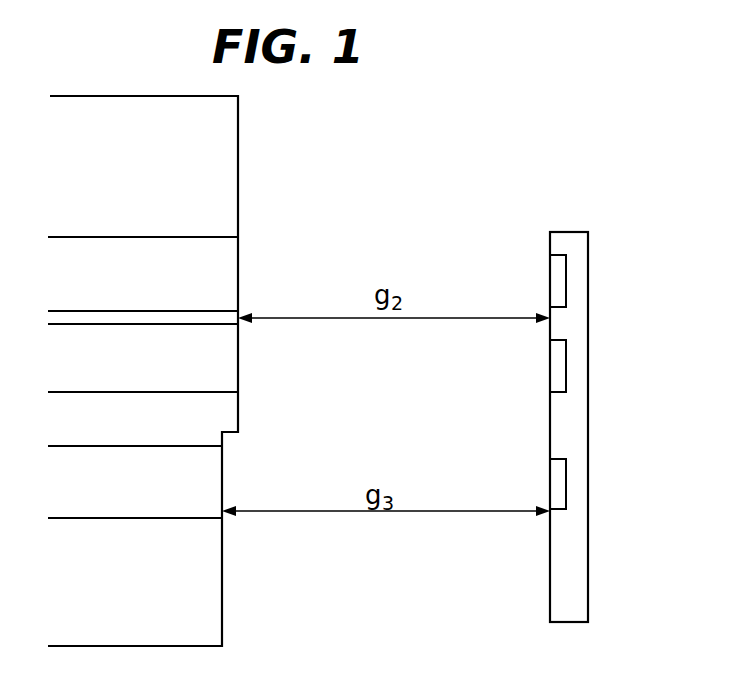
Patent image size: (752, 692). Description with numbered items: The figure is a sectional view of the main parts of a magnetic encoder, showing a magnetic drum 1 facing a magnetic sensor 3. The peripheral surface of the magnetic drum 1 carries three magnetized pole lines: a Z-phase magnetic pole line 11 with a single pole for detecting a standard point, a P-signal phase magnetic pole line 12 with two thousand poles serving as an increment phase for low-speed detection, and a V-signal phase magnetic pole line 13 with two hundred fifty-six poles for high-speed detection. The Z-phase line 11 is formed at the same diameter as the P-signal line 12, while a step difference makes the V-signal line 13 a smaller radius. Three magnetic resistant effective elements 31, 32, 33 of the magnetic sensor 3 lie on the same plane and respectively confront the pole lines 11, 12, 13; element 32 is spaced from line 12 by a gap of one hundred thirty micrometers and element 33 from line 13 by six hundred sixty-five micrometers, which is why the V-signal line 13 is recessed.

The magnetic drum 1 is at (238, 179).
The Z-phase magnetic pole line 11 is at (238, 280).
The P-signal phase magnetic pole line 12 is at (238, 363).
The V-signal phase magnetic pole line 13 is at (222, 487).
The magnetic sensor 3 is at (578, 270).
The magnetic resistant effective element 31 is at (550, 280).
The magnetic resistant effective element 32 is at (550, 367).
The magnetic resistant effective element 33 is at (550, 480).